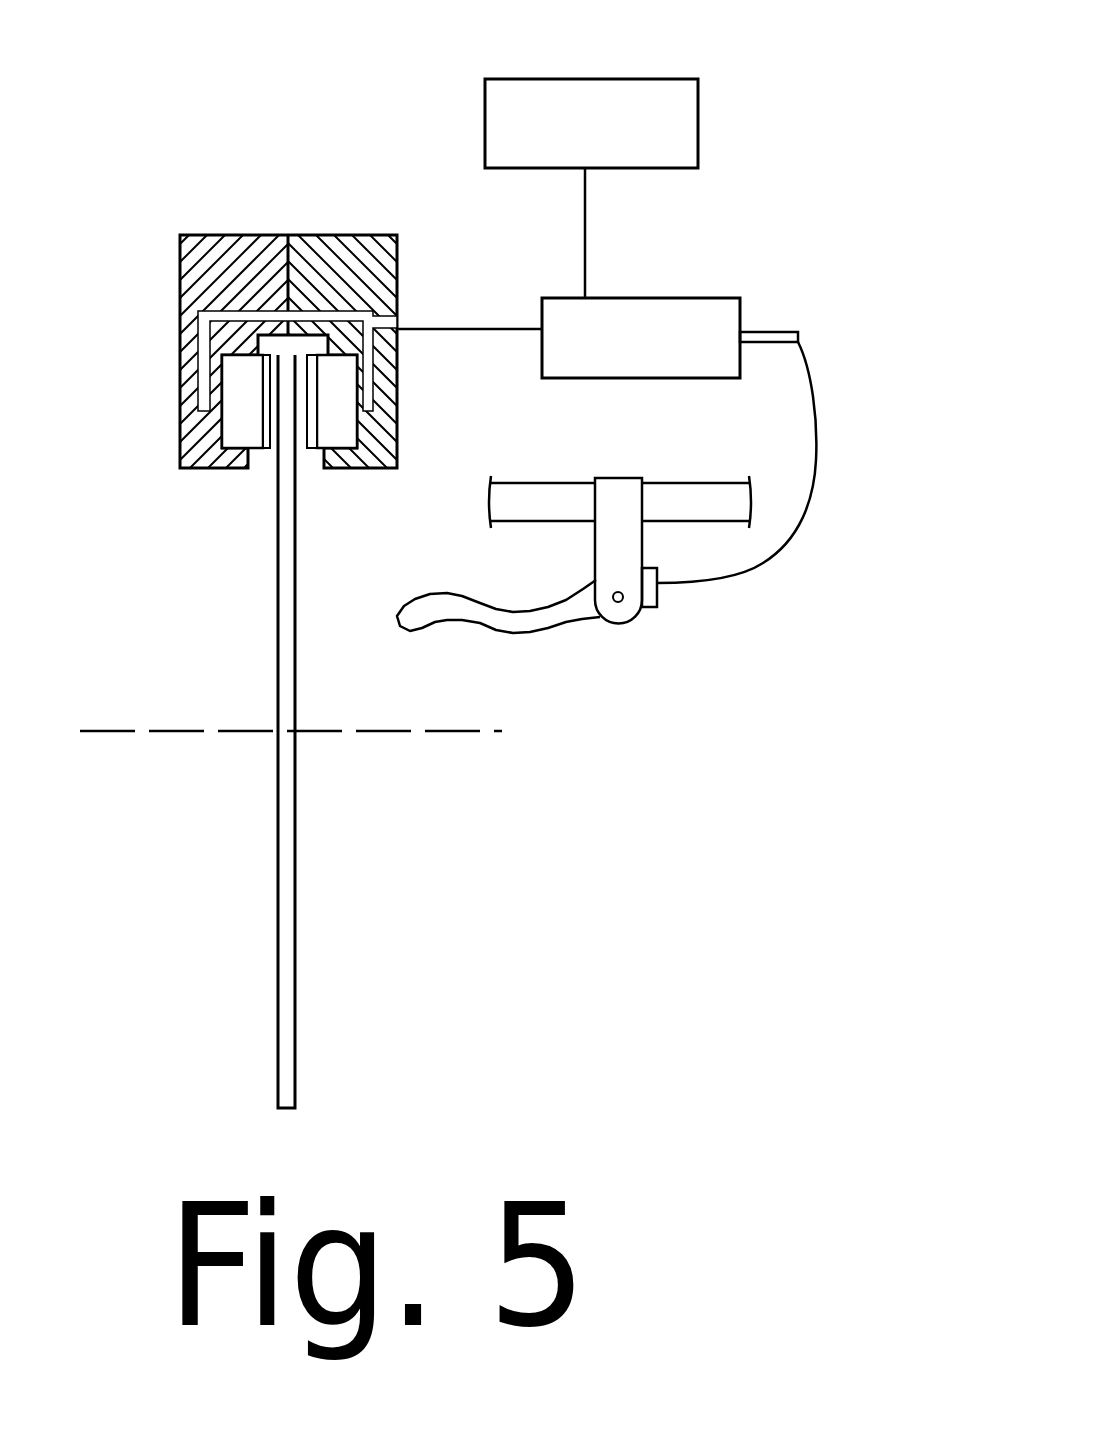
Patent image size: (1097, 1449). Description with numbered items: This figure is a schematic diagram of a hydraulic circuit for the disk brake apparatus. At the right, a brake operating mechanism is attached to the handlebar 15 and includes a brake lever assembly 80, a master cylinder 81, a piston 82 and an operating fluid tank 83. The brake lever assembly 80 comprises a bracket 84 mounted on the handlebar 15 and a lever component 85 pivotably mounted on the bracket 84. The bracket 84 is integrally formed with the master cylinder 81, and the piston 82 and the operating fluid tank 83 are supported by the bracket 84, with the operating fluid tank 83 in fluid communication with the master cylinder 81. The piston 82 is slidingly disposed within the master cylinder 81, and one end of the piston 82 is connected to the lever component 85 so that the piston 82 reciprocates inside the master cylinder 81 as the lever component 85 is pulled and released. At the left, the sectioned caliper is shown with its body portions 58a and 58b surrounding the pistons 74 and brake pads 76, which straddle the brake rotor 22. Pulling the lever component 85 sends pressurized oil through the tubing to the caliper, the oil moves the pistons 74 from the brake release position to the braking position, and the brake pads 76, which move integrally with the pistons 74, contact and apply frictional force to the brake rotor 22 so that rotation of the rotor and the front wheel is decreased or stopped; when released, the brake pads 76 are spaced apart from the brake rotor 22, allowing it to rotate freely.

The operating fluid tank 83 is at (628, 78).
The master cylinder 81 is at (662, 298).
The piston 82 is at (757, 328).
The handlebar 15 is at (540, 482).
The bracket 84 is at (595, 566).
The lever component 85 is at (498, 627).
The brake lever assembly 80 is at (624, 641).
The brake rotor 22 is at (298, 832).
The caliper body 58a is at (181, 430).
The fluid passage 58b is at (372, 382).
The pistons 74 is at (231, 428).
The brake pads 76 is at (266, 470).